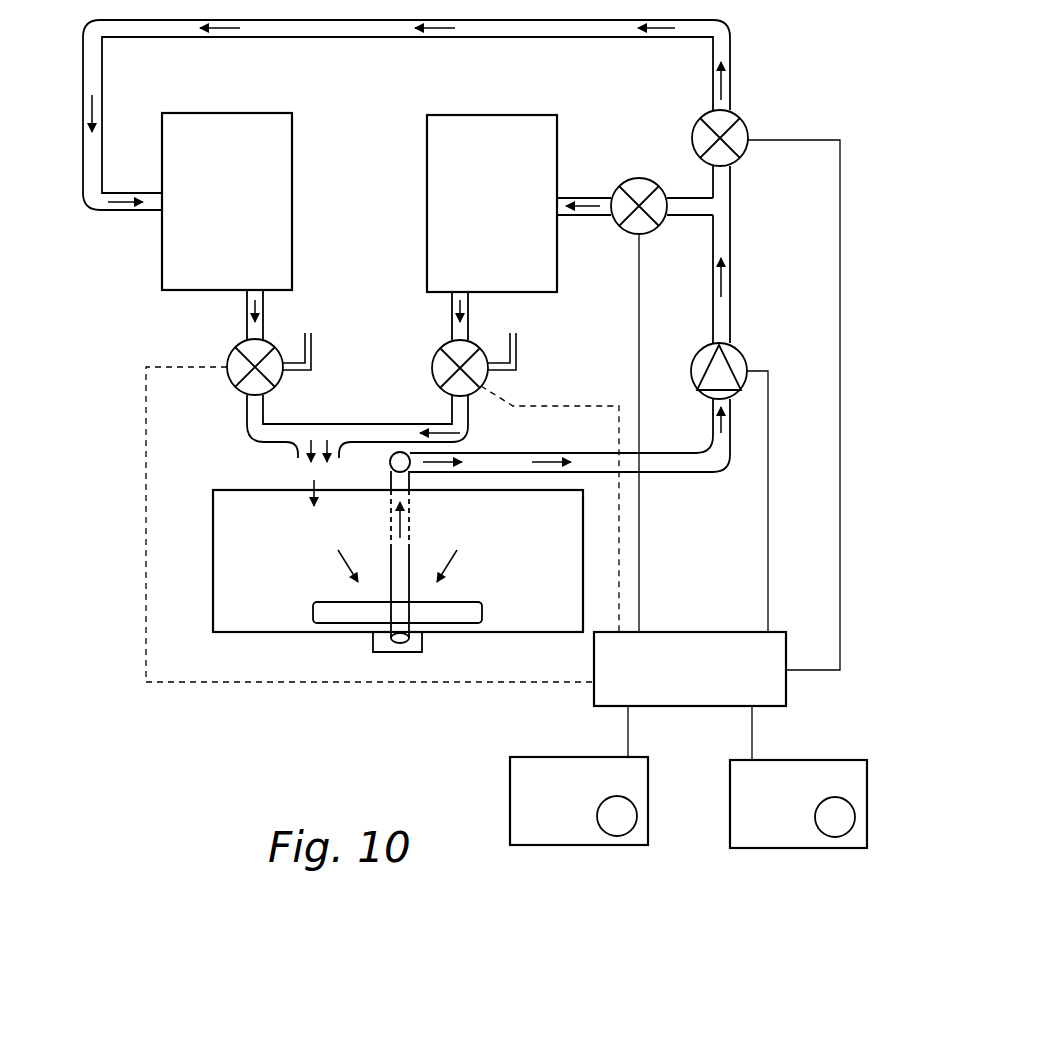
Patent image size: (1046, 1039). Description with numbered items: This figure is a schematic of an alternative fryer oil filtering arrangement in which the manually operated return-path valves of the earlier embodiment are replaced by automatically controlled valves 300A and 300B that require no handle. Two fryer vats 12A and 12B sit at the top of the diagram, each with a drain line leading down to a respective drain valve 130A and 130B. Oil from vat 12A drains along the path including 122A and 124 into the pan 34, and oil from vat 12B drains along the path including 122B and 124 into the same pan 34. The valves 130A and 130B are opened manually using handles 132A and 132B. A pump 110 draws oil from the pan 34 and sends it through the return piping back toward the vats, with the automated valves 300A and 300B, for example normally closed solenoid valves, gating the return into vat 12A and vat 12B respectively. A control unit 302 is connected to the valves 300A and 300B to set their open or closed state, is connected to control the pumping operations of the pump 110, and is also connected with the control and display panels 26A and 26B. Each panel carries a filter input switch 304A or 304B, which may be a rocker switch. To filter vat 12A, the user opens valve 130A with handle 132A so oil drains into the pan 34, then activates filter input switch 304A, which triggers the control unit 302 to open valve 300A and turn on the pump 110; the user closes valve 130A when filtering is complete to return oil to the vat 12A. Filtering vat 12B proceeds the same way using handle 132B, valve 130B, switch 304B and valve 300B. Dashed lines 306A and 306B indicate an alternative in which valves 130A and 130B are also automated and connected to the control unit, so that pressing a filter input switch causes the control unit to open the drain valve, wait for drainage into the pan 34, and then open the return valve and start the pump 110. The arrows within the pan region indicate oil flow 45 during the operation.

The vat 12A is at (243, 182).
The vat 12B is at (508, 182).
The control and display panel 26A is at (510, 797).
The control and display panel 26B is at (820, 760).
The pan 34 is at (213, 565).
The fluid flow in wash tank 45 is at (474, 580).
The pump 110 is at (740, 352).
The path 122A is at (265, 313).
The path 122B is at (452, 323).
The path 124 is at (364, 422).
The valve 130A is at (231, 355).
The valve 130B is at (434, 372).
The handle 132A is at (313, 353).
The handle 132B is at (518, 352).
The automatically controlled valve 300A is at (748, 130).
The automatically controlled valve 300B is at (636, 178).
The control unit 302 is at (700, 632).
The filter input switch 304A is at (598, 818).
The filter input switch 304B is at (816, 826).
The dashed line 306A is at (545, 406).
The dashed line 306B is at (146, 527).